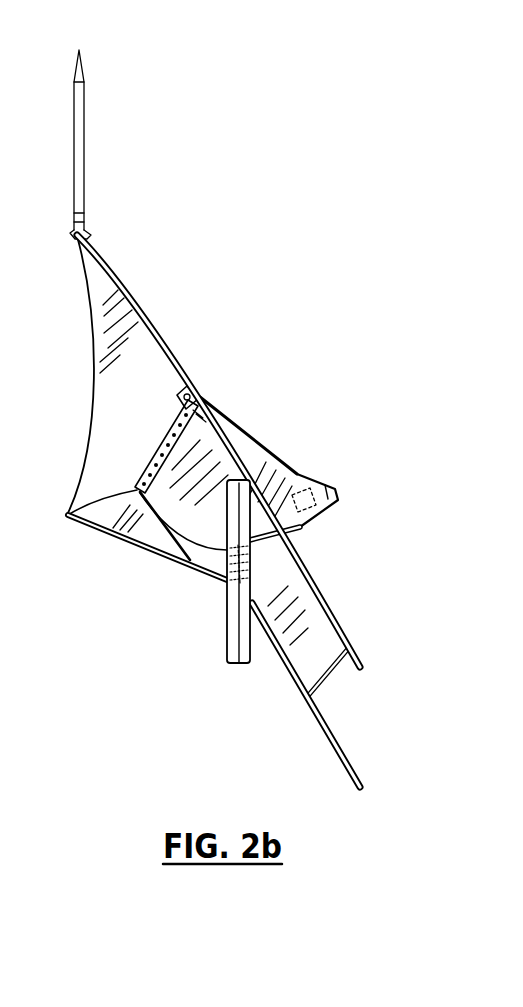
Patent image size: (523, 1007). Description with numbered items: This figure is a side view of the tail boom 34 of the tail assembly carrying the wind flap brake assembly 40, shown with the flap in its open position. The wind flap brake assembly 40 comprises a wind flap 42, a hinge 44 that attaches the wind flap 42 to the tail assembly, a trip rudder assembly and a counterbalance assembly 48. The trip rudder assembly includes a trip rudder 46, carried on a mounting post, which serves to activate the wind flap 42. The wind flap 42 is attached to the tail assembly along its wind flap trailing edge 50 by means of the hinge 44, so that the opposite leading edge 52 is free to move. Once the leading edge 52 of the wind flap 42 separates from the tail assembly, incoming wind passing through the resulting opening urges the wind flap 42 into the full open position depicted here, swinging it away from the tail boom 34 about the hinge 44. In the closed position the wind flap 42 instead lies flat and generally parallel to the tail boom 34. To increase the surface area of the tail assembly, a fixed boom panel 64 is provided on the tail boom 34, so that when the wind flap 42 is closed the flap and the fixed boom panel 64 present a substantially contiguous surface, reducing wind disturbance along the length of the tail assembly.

The tail boom 34 is at (362, 657).
The wind flap brake assembly 40 is at (312, 442).
The wind flap 42 is at (220, 522).
The hinge 44 is at (143, 466).
The trip rudder 46 is at (337, 490).
The counterbalance assembly 48 is at (233, 620).
The wind flap trailing edge 50 is at (200, 398).
The leading edge 52 is at (297, 534).
The fixed boom panel 64 is at (298, 650).